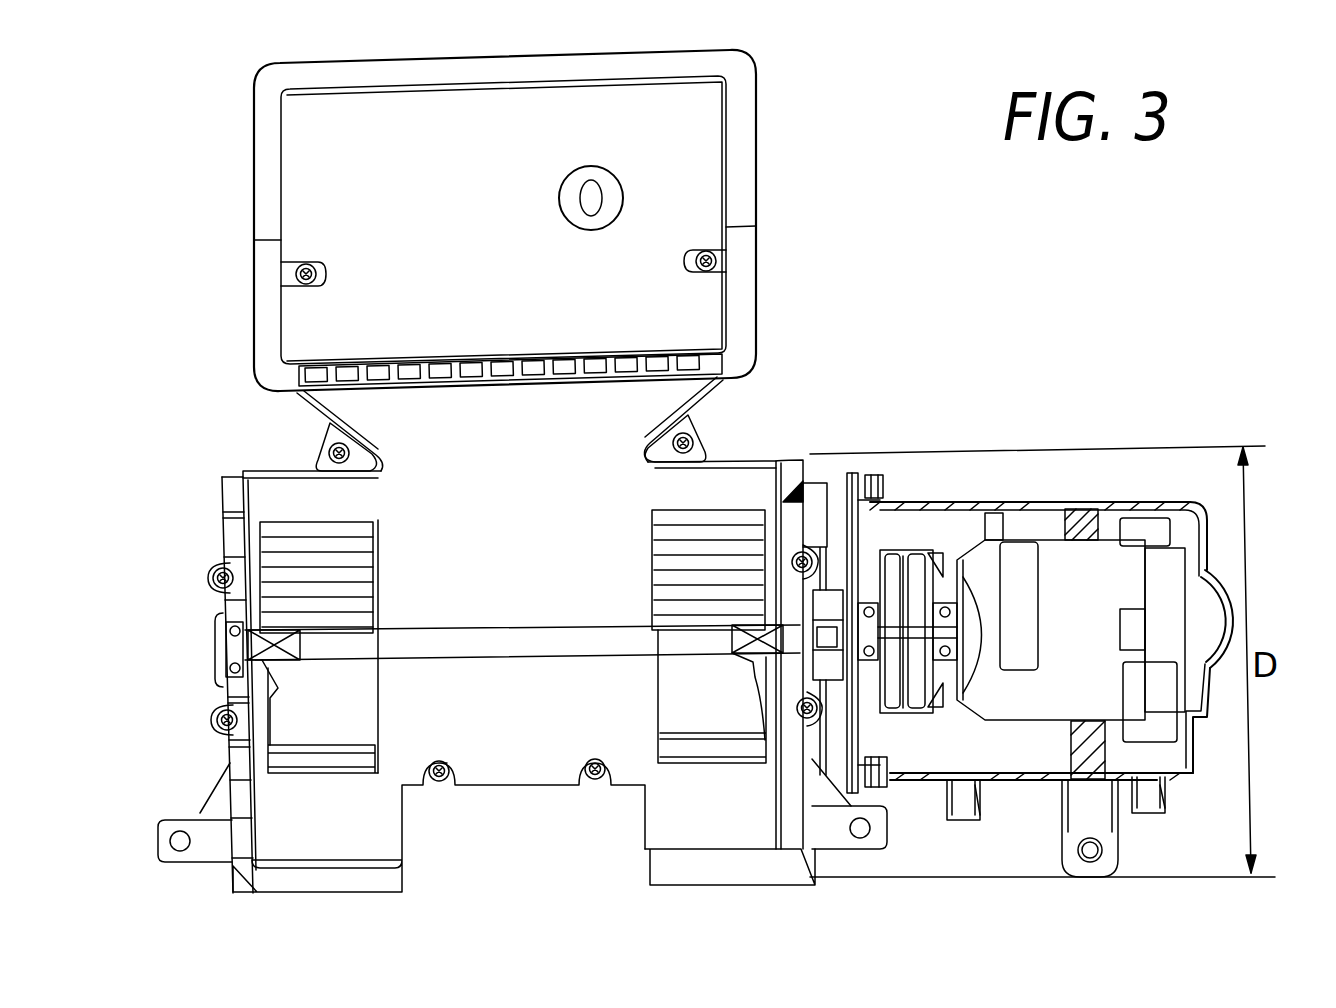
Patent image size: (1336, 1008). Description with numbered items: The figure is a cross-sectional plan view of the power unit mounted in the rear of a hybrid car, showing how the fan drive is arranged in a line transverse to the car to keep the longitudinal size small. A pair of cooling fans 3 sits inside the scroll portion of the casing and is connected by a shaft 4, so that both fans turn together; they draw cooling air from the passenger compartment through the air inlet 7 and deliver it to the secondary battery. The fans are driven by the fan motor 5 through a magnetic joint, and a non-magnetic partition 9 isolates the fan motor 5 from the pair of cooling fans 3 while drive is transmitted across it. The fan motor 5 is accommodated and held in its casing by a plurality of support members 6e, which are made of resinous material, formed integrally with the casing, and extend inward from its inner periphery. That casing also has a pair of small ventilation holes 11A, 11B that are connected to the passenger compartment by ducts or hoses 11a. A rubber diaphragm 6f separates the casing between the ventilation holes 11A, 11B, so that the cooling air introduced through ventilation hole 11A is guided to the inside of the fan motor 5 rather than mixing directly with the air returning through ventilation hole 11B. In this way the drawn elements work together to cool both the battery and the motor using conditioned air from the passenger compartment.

The cooling fans 3 is at (324, 779).
The shaft 4 is at (494, 659).
The fan motor 5 is at (1057, 507).
The support members 6e is at (1212, 585).
The rubber diaphragm 6f is at (1083, 507).
The air inlet 7 is at (658, 229).
The non-magnetic partition 9 is at (913, 535).
The ventilation hole 11A is at (962, 793).
The ventilation hole 11B is at (1147, 790).
The ducts or hoses 11a is at (983, 800).